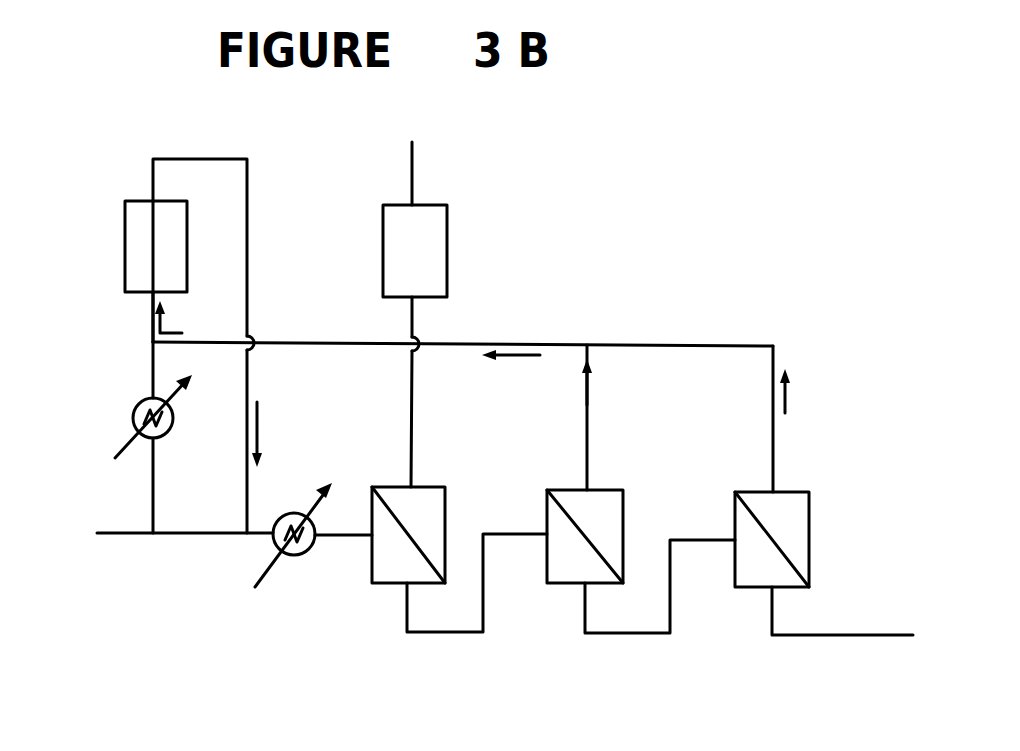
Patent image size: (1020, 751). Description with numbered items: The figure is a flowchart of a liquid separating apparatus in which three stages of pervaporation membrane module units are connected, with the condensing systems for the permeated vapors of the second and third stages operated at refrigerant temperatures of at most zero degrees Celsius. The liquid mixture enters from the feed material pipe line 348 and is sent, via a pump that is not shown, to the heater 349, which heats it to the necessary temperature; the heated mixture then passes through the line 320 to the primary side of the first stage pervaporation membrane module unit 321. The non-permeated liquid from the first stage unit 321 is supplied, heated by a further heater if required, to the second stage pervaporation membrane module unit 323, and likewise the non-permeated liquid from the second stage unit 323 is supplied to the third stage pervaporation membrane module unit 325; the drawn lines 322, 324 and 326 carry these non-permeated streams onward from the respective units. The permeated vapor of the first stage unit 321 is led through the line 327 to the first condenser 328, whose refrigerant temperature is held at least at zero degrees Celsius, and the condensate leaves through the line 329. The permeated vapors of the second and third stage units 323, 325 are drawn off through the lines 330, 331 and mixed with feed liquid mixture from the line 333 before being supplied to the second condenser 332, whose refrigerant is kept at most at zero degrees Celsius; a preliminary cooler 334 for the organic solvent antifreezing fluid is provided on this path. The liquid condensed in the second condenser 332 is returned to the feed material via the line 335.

The line 320 is at (337, 537).
The first stage pervaporation membrane module unit 321 is at (428, 487).
The residue line from first separator 322 is at (423, 632).
The second stage pervaporation membrane module unit 323 is at (597, 490).
The residue line from second separator 324 is at (634, 633).
The third stage pervaporation membrane module unit 325 is at (806, 492).
The residue outlet line 326 is at (823, 635).
The permeate line from first separator 327 is at (411, 385).
The first condenser 328 is at (447, 240).
The permeate outlet line 329 is at (413, 161).
The permeate line from second separator 330 is at (587, 425).
The permeate line from third separator 331 is at (773, 430).
The second condenser 332 is at (125, 201).
The line 333 is at (152, 352).
The preliminary cooler 334 is at (137, 405).
The line 335 is at (247, 247).
The feed material pipe line 348 is at (107, 532).
The heater 349 is at (294, 556).